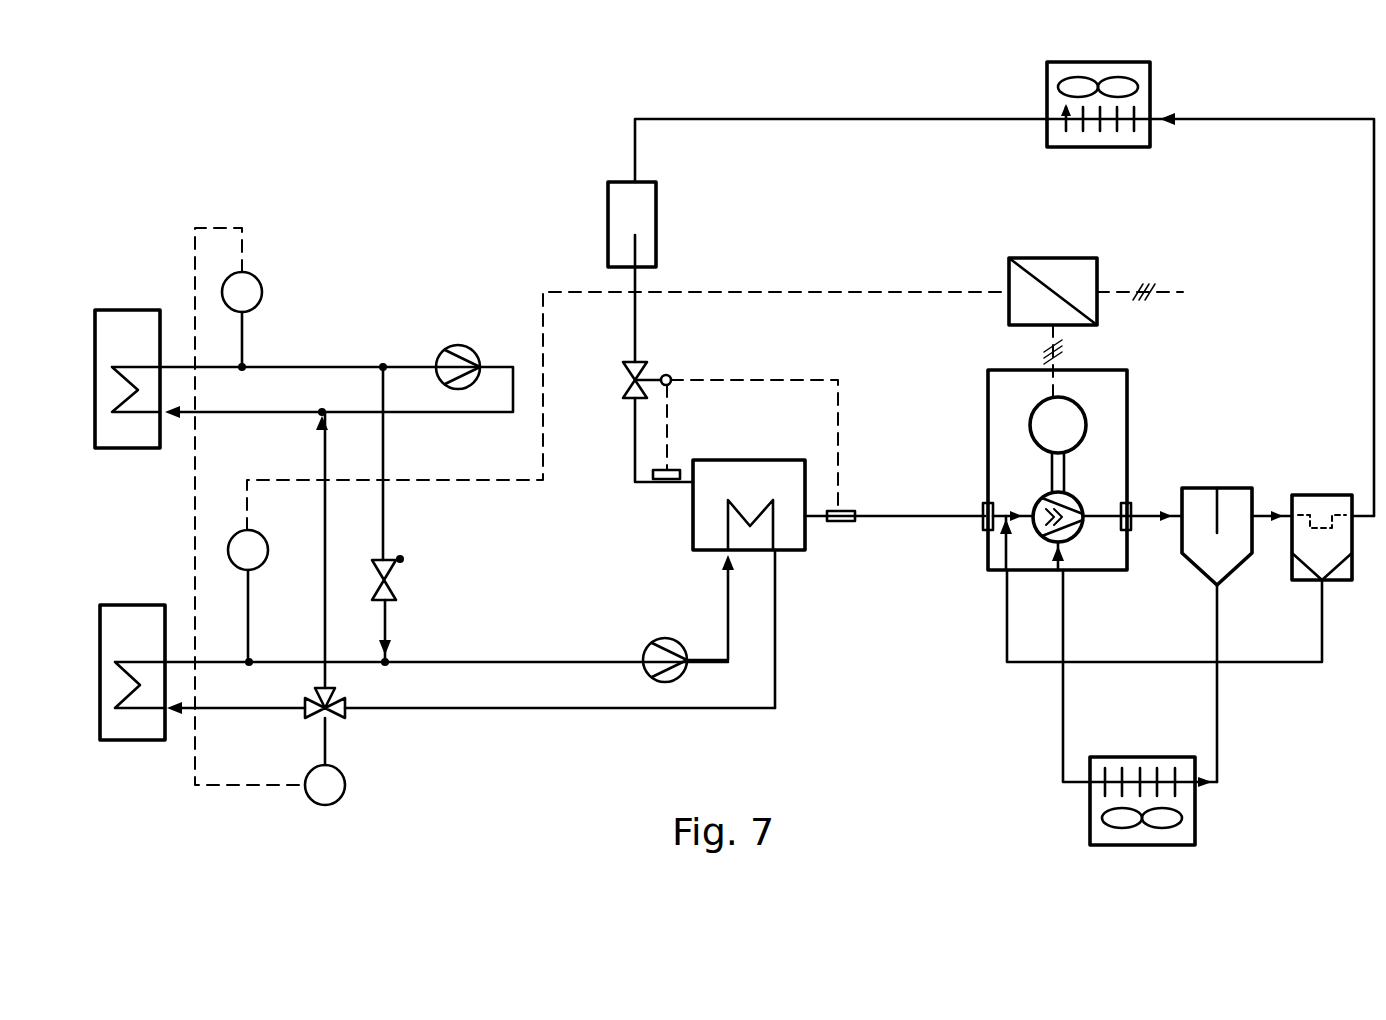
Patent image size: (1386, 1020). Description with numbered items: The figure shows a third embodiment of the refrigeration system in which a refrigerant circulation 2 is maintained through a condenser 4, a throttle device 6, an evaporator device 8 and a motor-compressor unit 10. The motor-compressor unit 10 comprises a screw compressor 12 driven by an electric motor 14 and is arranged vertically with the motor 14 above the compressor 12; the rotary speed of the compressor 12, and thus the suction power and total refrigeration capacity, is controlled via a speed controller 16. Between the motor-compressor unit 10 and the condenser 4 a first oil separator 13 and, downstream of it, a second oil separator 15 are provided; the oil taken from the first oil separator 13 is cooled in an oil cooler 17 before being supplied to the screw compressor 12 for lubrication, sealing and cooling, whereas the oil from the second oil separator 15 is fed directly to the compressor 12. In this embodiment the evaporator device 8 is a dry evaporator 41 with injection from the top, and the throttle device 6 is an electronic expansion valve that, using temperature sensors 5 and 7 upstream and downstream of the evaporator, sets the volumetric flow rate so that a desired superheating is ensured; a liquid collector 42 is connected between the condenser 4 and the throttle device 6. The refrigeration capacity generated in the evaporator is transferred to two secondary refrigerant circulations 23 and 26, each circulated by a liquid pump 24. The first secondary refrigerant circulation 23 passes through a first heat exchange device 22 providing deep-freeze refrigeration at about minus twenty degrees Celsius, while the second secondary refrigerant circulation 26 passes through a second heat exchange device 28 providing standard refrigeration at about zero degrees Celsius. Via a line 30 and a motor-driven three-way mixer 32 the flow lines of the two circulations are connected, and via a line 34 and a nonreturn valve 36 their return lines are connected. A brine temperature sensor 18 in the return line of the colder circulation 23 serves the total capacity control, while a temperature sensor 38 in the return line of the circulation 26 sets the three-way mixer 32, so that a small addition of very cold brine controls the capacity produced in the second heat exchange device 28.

The refrigerant circulation 2 is at (831, 110).
The condenser 4 is at (1047, 80).
The temperature sensor 5 is at (667, 483).
The throttle device 6 is at (628, 385).
The temperature sensor 7 is at (895, 544).
The evaporator device 8 is at (749, 474).
The motor-compressor unit 10 is at (1091, 483).
The screw compressor 12 is at (1076, 536).
The first oil separator 13 is at (1232, 488).
The electric motor 14 is at (1087, 425).
The second oil separator 15 is at (1310, 495).
The speed controller 16 is at (1044, 258).
The oil cooler 17 is at (1150, 846).
The brine temperature sensor 18 is at (261, 566).
The first heat exchange device 22 is at (130, 740).
The first secondary refrigerant circulation 23 is at (536, 718).
The liquid pump 24 is at (452, 345).
The second secondary refrigerant circulation 26 is at (345, 346).
The second heat exchange device 28 is at (127, 310).
The line 30 is at (327, 553).
The motor-driven three-way mixer 32 is at (337, 718).
The line 34 is at (385, 440).
The nonreturn valve 36 is at (397, 587).
The temperature sensor 38 is at (262, 292).
The dry evaporator 41 is at (752, 458).
The liquid collector 42 is at (657, 212).